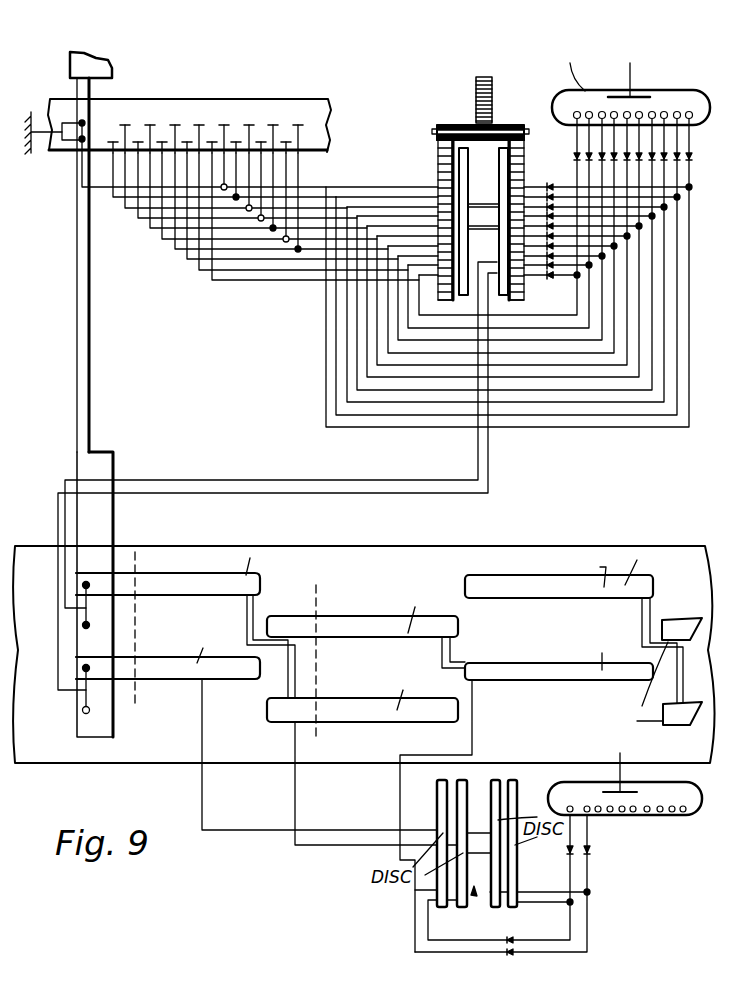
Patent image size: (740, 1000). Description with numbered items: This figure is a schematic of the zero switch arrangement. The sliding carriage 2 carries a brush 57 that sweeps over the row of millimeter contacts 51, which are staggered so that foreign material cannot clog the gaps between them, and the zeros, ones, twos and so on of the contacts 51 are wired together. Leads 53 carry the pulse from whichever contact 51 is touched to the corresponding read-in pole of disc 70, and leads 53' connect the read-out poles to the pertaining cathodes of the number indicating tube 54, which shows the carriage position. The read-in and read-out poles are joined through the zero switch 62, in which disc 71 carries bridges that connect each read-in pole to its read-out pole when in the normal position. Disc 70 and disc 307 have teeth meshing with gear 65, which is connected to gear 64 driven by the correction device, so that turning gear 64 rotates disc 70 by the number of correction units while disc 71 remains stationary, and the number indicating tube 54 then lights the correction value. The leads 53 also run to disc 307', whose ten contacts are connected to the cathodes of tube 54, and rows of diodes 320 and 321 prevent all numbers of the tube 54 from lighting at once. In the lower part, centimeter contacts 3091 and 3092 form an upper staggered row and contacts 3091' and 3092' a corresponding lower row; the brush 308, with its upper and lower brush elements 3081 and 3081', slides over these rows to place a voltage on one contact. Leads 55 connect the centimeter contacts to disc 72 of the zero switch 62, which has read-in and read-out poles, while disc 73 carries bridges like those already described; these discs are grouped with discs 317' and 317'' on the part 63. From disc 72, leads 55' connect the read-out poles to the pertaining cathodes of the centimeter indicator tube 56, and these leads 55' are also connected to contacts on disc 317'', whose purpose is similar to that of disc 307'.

The sliding carriage 2 is at (80, 98).
The brush 57 is at (86, 128).
The contacts 51 is at (200, 128).
The leads 53 is at (260, 232).
The leads 53' is at (475, 273).
The gear 65 is at (460, 124).
The gear 64 is at (492, 96).
The disc 70 is at (457, 178).
The disc 71 is at (462, 187).
The disc 307 is at (489, 219).
The disc 307' is at (600, 220).
The row of diodes 320 is at (575, 157).
The row of diodes 321 is at (553, 280).
The number indicating tube 54 is at (667, 93).
The zero switch 62 is at (472, 298).
The conductor 3081 is at (281, 435).
The conductor 3081' is at (277, 481).
The brush 308 is at (86, 697).
The centimeter contacts 3091 is at (364, 614).
The centimeter contacts 3091' is at (168, 675).
The centimeter contacts 3092 is at (489, 653).
The centimeter contacts 3092' is at (460, 699).
The disc 73 is at (467, 782).
The disc 317' is at (548, 823).
The disc 317'' is at (535, 843).
The disc 72 is at (440, 798).
The centimeter indicator tube 56 is at (655, 784).
The shaft 63 is at (474, 888).
The leads 55 is at (337, 815).
The leads 55' is at (502, 905).